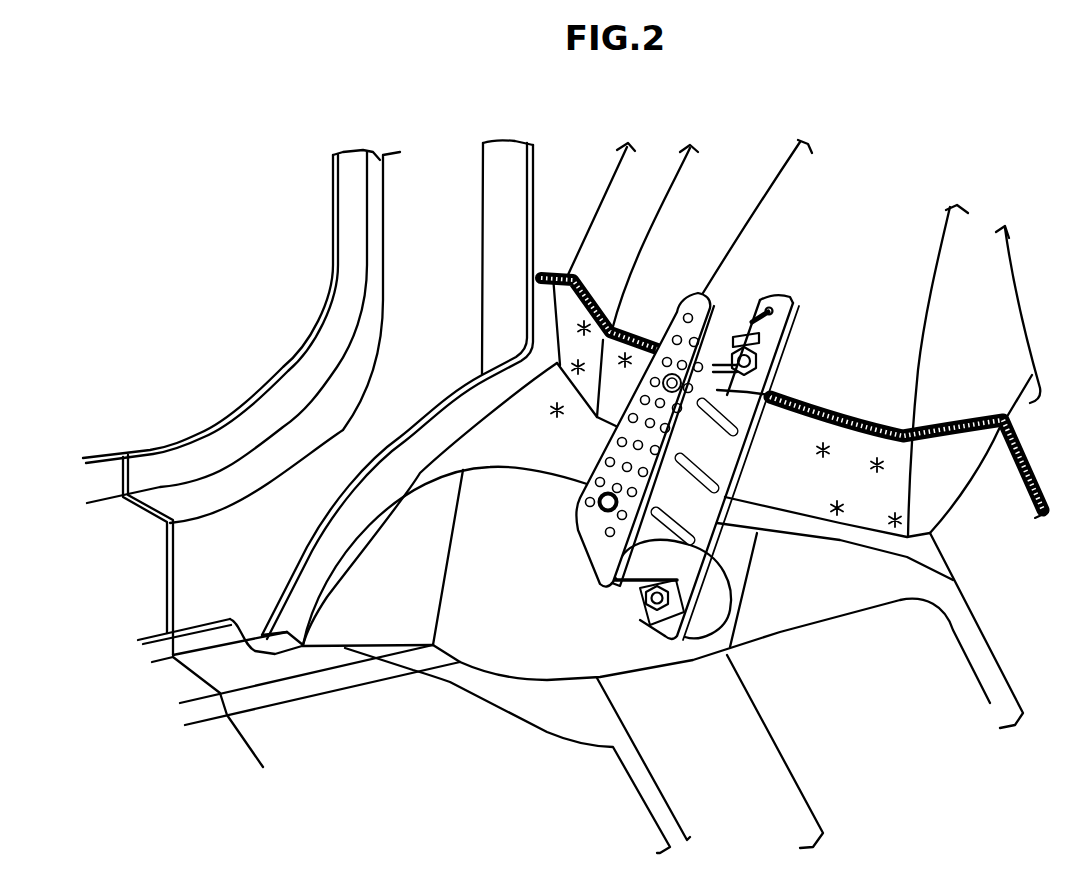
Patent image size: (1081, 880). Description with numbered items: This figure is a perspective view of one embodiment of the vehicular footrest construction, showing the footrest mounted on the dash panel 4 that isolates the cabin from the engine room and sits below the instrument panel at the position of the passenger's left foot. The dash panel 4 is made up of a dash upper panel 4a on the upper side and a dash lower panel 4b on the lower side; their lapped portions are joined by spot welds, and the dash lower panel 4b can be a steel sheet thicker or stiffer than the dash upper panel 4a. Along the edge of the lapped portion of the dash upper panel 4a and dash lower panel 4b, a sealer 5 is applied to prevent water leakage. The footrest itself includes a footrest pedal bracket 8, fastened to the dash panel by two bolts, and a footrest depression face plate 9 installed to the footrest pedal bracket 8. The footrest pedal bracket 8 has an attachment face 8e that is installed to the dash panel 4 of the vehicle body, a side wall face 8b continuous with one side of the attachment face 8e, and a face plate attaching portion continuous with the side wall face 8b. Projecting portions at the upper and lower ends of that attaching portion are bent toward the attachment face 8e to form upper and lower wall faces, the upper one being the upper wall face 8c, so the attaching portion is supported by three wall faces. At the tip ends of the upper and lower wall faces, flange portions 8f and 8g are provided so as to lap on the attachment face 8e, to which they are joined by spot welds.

The dash panel 4 is at (817, 268).
The dash upper panel 4a is at (610, 232).
The dash lower panel 4b is at (553, 276).
The sealer 5 is at (862, 415).
The footrest pedal bracket 8 is at (723, 452).
The side wall face 8b is at (630, 585).
The upper wall face 8c is at (745, 420).
The attachment face 8e is at (723, 467).
The flange portion 8f is at (790, 336).
The flange portion 8g is at (655, 620).
The footrest depression face plate 9 is at (578, 520).